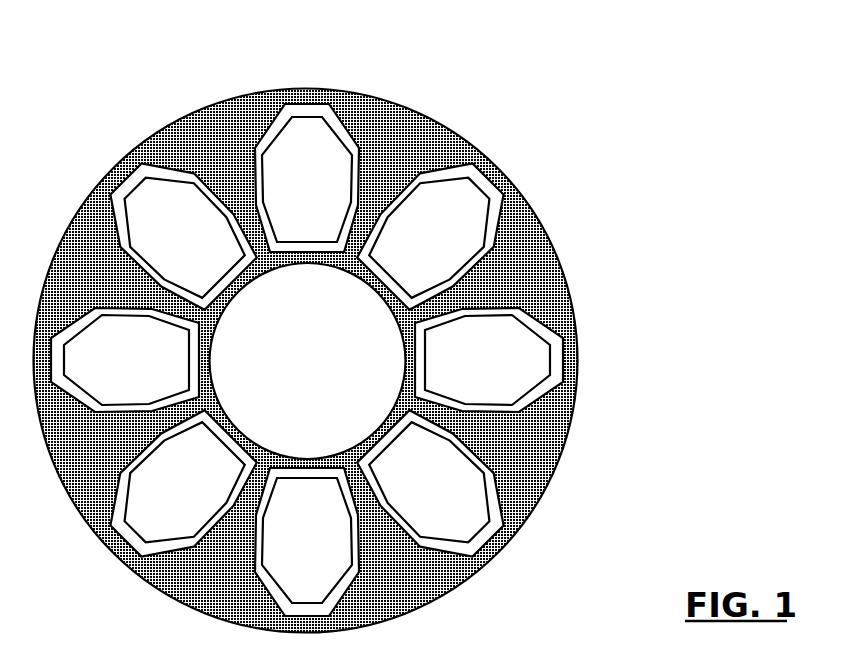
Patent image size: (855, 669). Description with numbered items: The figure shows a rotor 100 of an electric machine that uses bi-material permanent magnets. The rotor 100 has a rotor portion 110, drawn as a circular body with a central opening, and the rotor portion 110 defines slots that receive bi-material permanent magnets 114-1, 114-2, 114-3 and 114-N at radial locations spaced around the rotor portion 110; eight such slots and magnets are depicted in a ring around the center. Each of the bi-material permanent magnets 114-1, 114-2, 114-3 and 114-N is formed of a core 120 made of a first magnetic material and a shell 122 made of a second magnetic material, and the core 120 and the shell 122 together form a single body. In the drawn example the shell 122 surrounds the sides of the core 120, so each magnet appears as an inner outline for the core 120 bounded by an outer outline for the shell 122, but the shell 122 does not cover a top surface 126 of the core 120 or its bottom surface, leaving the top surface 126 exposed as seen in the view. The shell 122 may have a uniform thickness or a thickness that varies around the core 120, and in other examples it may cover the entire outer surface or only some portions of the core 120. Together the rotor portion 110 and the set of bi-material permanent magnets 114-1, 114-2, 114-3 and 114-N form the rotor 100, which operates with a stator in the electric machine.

The rotor 100 is at (434, 74).
The rotor portion 110 is at (535, 282).
The bi-material permanent magnet 114-1 is at (508, 483).
The bi-material permanent magnet 114-2 is at (569, 360).
The bi-material permanent magnet 114-3 is at (490, 173).
The bi-material permanent magnet 114-N is at (337, 595).
The core 120 is at (484, 462).
The shell 122 is at (493, 493).
The top surface 126 is at (515, 378).